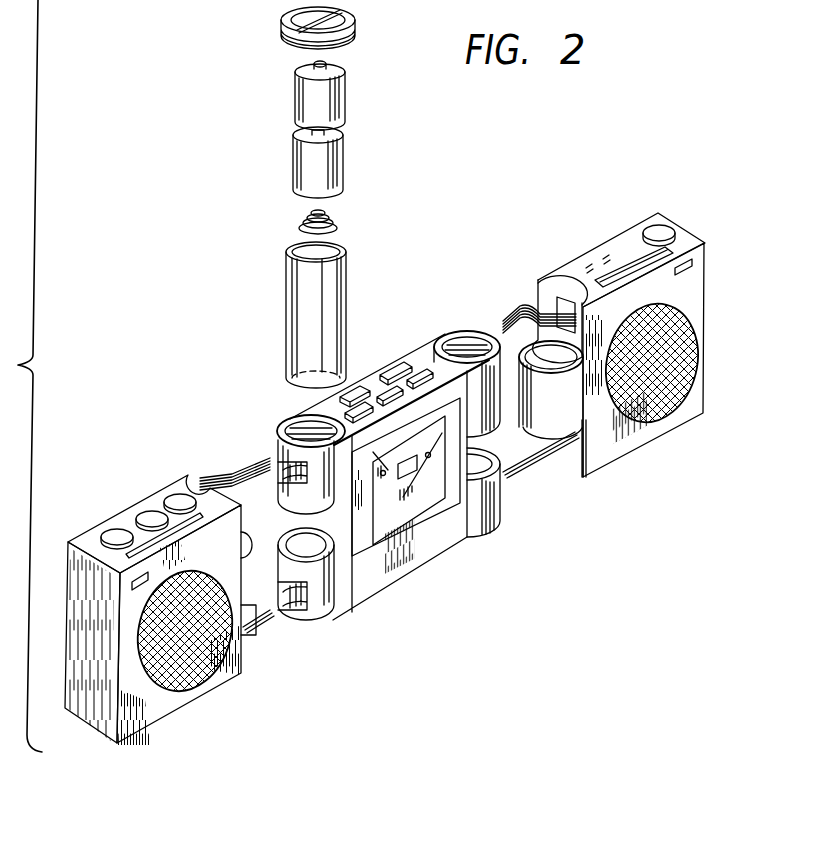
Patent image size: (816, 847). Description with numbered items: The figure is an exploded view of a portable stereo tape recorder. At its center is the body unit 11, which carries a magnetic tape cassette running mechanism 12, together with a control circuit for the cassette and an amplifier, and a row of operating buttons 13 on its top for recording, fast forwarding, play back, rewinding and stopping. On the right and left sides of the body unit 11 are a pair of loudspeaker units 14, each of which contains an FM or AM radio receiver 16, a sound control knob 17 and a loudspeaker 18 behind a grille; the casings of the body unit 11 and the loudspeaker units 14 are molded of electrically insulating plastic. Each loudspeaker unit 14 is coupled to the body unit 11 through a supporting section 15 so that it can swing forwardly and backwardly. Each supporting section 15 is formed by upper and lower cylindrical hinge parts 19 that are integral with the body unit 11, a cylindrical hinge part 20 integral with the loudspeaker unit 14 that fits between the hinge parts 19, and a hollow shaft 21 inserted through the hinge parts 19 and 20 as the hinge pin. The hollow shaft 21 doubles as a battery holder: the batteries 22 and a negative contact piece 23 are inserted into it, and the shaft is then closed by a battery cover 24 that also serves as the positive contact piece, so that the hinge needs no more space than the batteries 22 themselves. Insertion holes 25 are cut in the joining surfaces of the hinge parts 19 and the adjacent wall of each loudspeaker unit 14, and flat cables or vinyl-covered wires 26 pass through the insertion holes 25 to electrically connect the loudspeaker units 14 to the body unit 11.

The body unit 11 is at (405, 570).
The magnetic tape cassette running mechanism 12 is at (430, 480).
The operating buttons 13 is at (395, 368).
The loudspeaker unit 14 is at (165, 720).
The supporting section 15 is at (482, 306).
The radio receiver 16 is at (140, 533).
The sound control knob 17 is at (175, 498).
The loudspeaker 18 is at (195, 680).
The upper and lower cylindrical hinge parts 19 is at (465, 335).
The cylindrical hinge part 20 is at (530, 400).
The hollow shaft 21 is at (288, 277).
The batteries 22 is at (296, 93).
The negative contact piece 23 is at (300, 216).
The battery cover 24 is at (290, 25).
The insertion holes 25 is at (560, 300).
The flat cables or vinyl-covered wires 26 is at (518, 305).